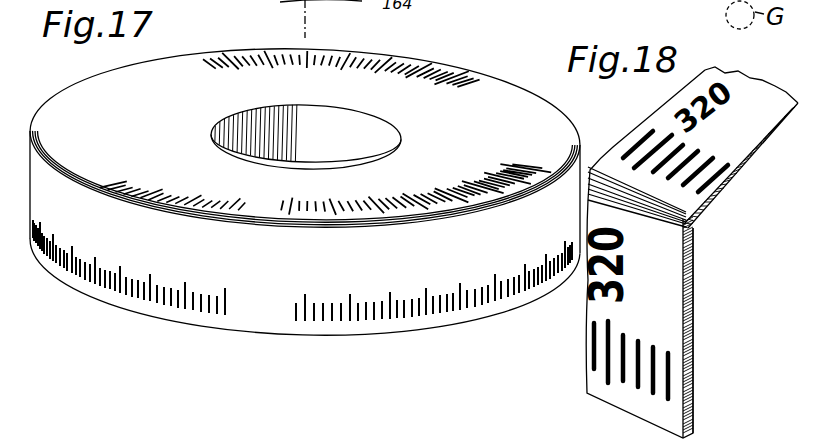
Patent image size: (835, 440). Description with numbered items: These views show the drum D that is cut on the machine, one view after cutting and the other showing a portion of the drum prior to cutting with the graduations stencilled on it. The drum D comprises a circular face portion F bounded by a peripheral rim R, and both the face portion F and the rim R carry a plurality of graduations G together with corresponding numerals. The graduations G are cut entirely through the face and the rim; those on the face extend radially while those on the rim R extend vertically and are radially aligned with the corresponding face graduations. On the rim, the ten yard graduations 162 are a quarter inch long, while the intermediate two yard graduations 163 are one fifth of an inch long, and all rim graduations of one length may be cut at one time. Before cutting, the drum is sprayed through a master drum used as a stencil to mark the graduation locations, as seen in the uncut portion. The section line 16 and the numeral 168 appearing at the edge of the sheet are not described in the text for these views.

In FIG. 17, the section line 16- 16 is at (280, 30).
In FIG. 17, the ten yard graduations 162 is at (388, 318).
In FIG. 17, the intermediate two yard graduations 163 is at (441, 307).
In FIG. 17, the detail portion 168 is at (727, 6).
In FIG. 17, the drum D is at (494, 75).
In FIG. 18, the drum D is at (717, 207).
In FIG. 17, the circular face portion F is at (445, 96).
In FIG. 18, the circular face portion F is at (757, 153).
In FIG. 17, the graduations G is at (470, 176).
In FIG. 17, the peripheral rim R is at (580, 152).
In FIG. 18, the peripheral rim R is at (672, 283).